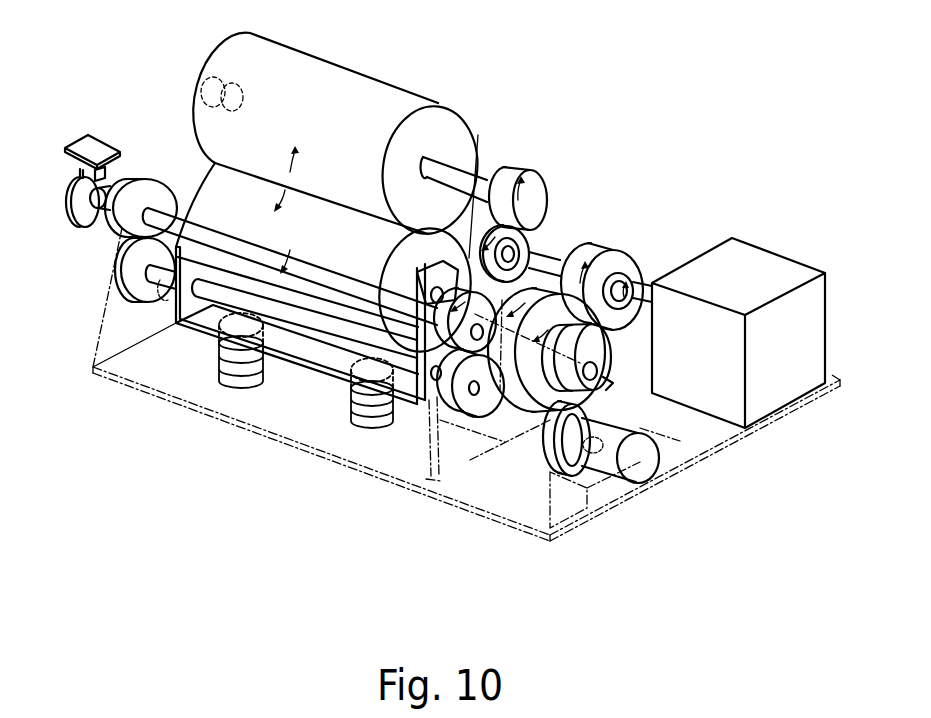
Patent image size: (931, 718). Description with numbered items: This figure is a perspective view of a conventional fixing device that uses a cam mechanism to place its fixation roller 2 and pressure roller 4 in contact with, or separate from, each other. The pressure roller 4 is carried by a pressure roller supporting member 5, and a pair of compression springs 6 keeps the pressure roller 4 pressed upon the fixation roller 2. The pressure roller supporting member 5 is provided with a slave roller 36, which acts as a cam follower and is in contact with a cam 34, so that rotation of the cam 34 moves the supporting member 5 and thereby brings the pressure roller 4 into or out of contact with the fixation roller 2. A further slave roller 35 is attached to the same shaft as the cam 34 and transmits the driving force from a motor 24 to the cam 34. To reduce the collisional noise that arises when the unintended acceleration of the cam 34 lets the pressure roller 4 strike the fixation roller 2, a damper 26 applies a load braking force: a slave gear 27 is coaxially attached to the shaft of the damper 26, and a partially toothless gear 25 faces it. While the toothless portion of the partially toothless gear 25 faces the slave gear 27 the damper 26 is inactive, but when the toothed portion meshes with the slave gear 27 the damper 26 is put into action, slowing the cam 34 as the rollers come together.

The fixation roller 2 is at (372, 95).
The pressure roller 4 is at (195, 185).
The pressure roller supporting member 5 is at (313, 380).
The compression springs 6 is at (232, 380).
The motor 24 is at (695, 275).
The partially toothless gear 25 is at (617, 377).
The damper 26 is at (600, 478).
The slave gear 27 is at (550, 470).
The cam 34 is at (462, 288).
The slave roller 35 is at (507, 440).
The slave roller (cam follower) 36 is at (447, 440).